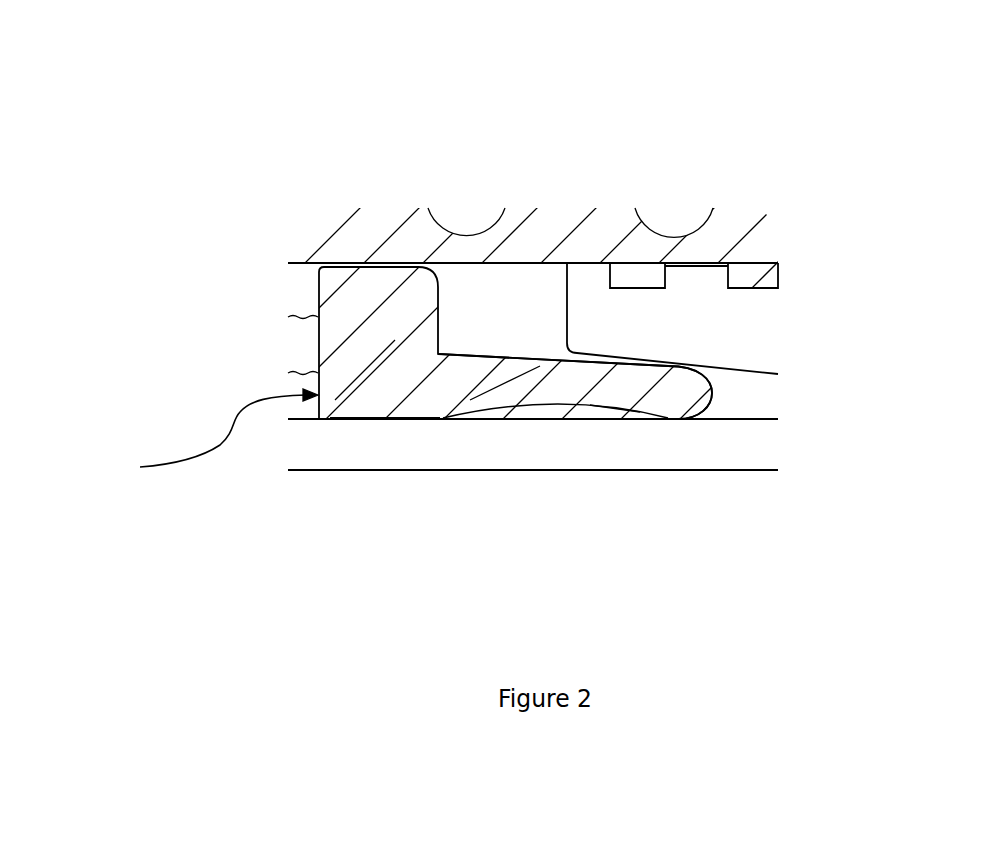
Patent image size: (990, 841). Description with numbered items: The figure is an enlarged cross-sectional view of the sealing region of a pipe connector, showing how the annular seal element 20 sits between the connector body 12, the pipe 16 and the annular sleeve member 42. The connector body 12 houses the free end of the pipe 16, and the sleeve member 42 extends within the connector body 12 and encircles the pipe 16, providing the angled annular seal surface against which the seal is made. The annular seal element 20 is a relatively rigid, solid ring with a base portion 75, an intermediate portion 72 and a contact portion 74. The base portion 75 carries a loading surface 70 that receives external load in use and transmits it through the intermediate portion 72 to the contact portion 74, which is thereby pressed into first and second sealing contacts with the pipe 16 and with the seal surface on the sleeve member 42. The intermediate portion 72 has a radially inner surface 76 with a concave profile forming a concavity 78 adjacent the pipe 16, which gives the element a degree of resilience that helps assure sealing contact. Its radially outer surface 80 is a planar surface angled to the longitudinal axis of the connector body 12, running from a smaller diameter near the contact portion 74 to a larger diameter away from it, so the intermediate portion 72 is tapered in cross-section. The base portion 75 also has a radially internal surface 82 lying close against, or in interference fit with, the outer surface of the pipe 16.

The connector body 12 is at (382, 230).
The pipe 16 is at (767, 449).
The annular seal element 20 is at (209, 435).
The annular sleeve member 42 is at (748, 335).
The loading surface 70 is at (315, 288).
The intermediate portion 72 is at (510, 387).
The contact portion 74 is at (675, 395).
The base portion 75 is at (365, 345).
The radially inner surface 76 is at (603, 405).
The concavity 78 is at (567, 410).
The radially outer surface 80 is at (510, 355).
The radially internal surface 82 is at (380, 420).